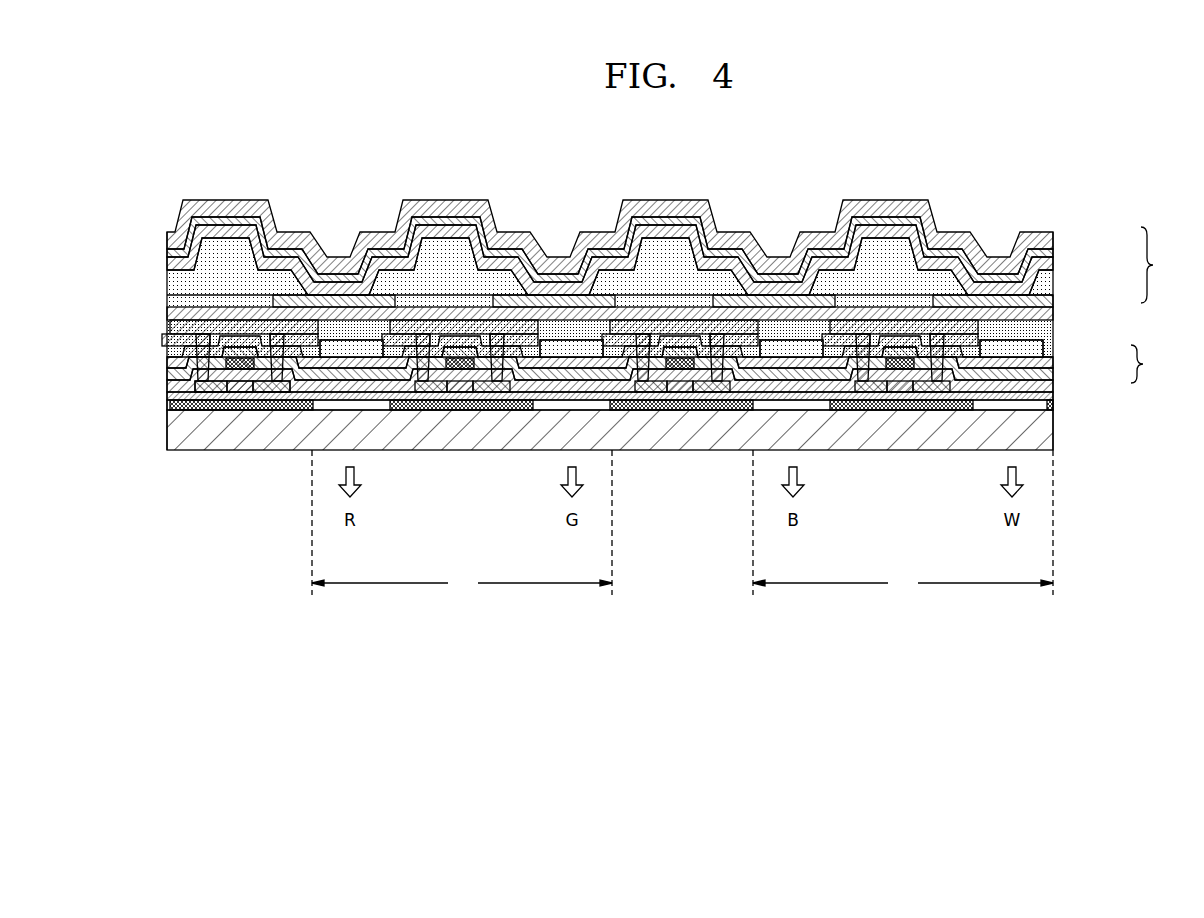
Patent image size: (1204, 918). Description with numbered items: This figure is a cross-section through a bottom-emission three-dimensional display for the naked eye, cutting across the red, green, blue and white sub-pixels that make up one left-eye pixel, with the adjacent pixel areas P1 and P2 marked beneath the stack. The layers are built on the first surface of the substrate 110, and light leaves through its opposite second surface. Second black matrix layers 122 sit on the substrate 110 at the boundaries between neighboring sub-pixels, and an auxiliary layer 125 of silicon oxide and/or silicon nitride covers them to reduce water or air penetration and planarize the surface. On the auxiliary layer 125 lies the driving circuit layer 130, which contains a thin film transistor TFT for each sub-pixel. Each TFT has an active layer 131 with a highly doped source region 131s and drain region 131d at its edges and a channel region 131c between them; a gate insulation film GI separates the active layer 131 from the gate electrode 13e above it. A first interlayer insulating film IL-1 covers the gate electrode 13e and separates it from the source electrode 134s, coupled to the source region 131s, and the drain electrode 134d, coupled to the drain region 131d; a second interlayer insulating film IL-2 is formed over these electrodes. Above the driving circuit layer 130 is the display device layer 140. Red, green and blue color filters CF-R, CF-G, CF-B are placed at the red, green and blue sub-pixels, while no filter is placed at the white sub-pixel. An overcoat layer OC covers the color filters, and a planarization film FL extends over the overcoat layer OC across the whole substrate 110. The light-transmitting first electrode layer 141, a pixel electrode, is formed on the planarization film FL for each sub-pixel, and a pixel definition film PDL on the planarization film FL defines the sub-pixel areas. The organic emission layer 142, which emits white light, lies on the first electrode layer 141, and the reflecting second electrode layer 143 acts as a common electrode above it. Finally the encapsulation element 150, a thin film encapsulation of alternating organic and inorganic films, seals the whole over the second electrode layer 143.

The substrate 110 is at (1043, 433).
The second black matrix layer 122 is at (185, 410).
The auxiliary layer 125 is at (1053, 398).
The gate insulation film GI is at (1053, 386).
The first interlayer insulating film IL-1 is at (1053, 374).
The second interlayer insulating film IL-2 is at (1053, 362).
The driving circuit layer 130 is at (1155, 364).
The active layer 131 is at (284, 514).
The source region 131s is at (210, 392).
The channel region 131c is at (238, 392).
The drain region 131d is at (272, 392).
The gate electrode 13e is at (238, 358).
The source electrode 134s is at (205, 345).
The drain electrode 134d is at (278, 345).
The thin film transistor TFT is at (512, 372).
The red color filter CF-R is at (352, 323).
The green color filter CF-G is at (565, 322).
The blue color filter CF-B is at (793, 322).
The overcoat layer OC is at (1053, 313).
The planarization film FL is at (1053, 300).
The pixel definition film PDL is at (888, 258).
The first electrode layer 141 is at (1053, 285).
The organic emission layer 142 is at (1053, 268).
The second electrode layer 143 is at (1053, 256).
The display device layer 140 is at (1165, 265).
The encapsulation element 150 is at (1053, 243).
The pixel area P1 is at (462, 583).
The pixel area P2 is at (903, 583).